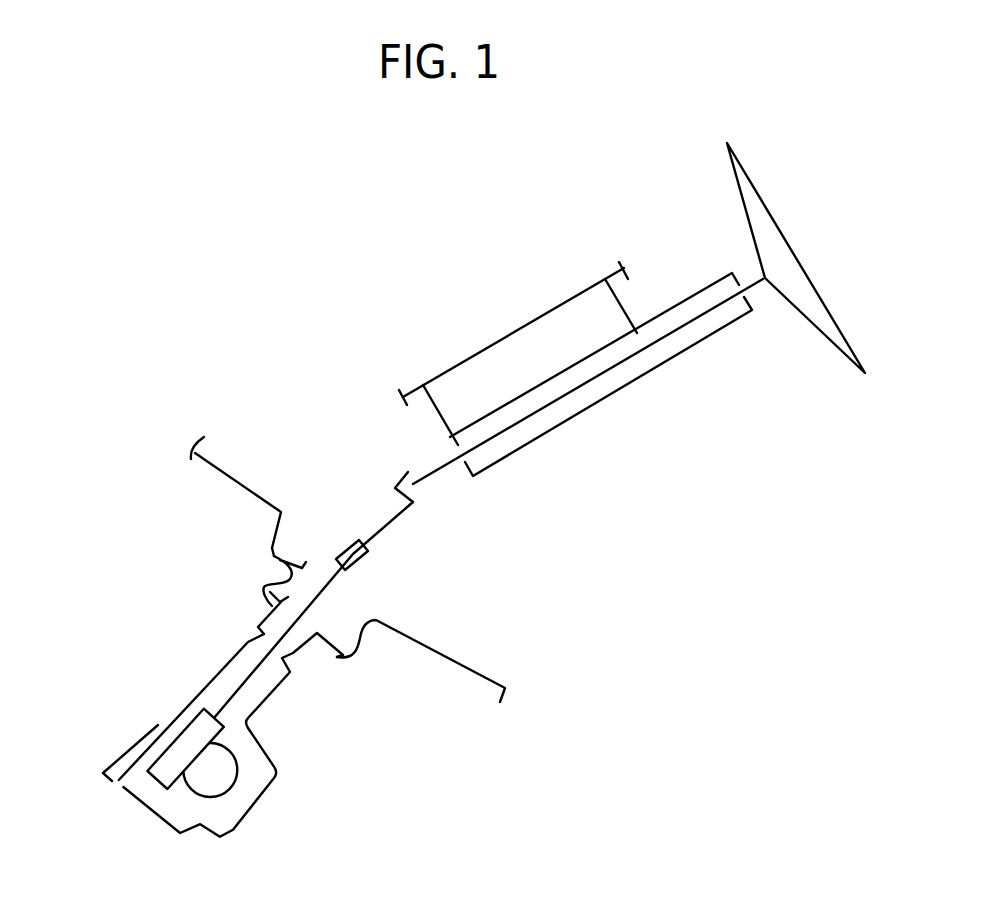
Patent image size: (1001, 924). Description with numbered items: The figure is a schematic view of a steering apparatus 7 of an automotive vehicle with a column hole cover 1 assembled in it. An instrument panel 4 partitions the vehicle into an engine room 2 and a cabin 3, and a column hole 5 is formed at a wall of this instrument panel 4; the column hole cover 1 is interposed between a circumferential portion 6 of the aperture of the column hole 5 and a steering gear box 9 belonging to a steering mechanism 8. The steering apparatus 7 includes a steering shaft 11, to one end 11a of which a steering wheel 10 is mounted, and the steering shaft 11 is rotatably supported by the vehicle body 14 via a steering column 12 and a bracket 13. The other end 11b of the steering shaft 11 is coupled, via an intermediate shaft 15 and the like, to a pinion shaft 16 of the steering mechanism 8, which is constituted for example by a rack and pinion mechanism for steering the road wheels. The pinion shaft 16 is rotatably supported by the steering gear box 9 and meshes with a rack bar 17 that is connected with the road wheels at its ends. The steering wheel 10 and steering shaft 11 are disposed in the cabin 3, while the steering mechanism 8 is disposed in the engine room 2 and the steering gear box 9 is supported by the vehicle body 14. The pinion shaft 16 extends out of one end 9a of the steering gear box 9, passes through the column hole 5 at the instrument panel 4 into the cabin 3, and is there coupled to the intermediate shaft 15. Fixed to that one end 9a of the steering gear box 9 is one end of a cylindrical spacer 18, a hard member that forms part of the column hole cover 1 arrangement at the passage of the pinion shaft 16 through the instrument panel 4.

The column hole cover 1 is at (240, 585).
The engine room 2 is at (420, 815).
The cabin 3 is at (597, 623).
The instrument panel 4 is at (233, 473).
The column hole 5 is at (357, 603).
The circumferential portion 6 is at (268, 553).
The steering apparatus 7 is at (492, 488).
The steering mechanism 8 is at (173, 690).
The steering gear box 9 is at (222, 660).
The one end of the steering gear box 9a is at (307, 663).
The steering wheel 10 is at (838, 330).
The steering shaft 11 is at (655, 345).
The one end of the steering shaft 11a is at (757, 283).
The other end of the steering shaft 11b is at (398, 472).
The steering column 12 is at (603, 398).
The bracket 13 is at (463, 403).
The vehicle body 14 is at (505, 340).
The intermediate shaft 15 is at (378, 532).
The pinion shaft 16 is at (242, 686).
The rack bar 17 is at (217, 782).
The cylindrical spacer 18 is at (378, 642).